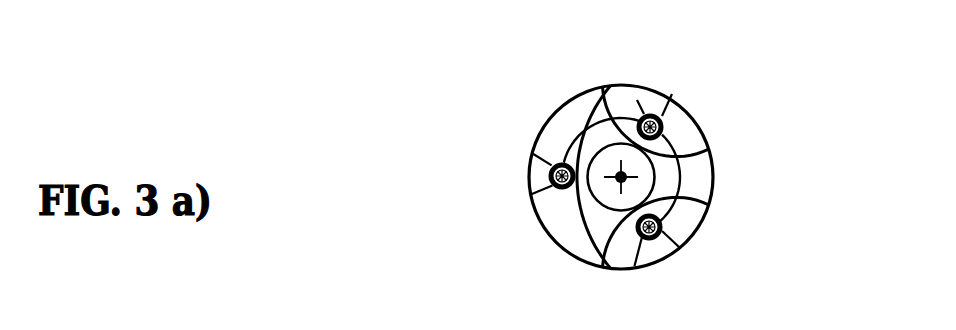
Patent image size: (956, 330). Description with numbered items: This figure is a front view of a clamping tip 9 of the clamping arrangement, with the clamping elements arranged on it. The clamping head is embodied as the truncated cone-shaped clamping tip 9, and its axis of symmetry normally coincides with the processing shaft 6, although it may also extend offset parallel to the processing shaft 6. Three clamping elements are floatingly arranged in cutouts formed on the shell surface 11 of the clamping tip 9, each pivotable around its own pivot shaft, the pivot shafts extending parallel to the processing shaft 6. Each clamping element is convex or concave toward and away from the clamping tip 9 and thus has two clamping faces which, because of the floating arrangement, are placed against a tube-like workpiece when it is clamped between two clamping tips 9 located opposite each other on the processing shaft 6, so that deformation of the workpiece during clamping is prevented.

The processing shaft 6 is at (630, 181).
The clamping tip 9 is at (608, 186).
The shell surface 11 is at (587, 243).